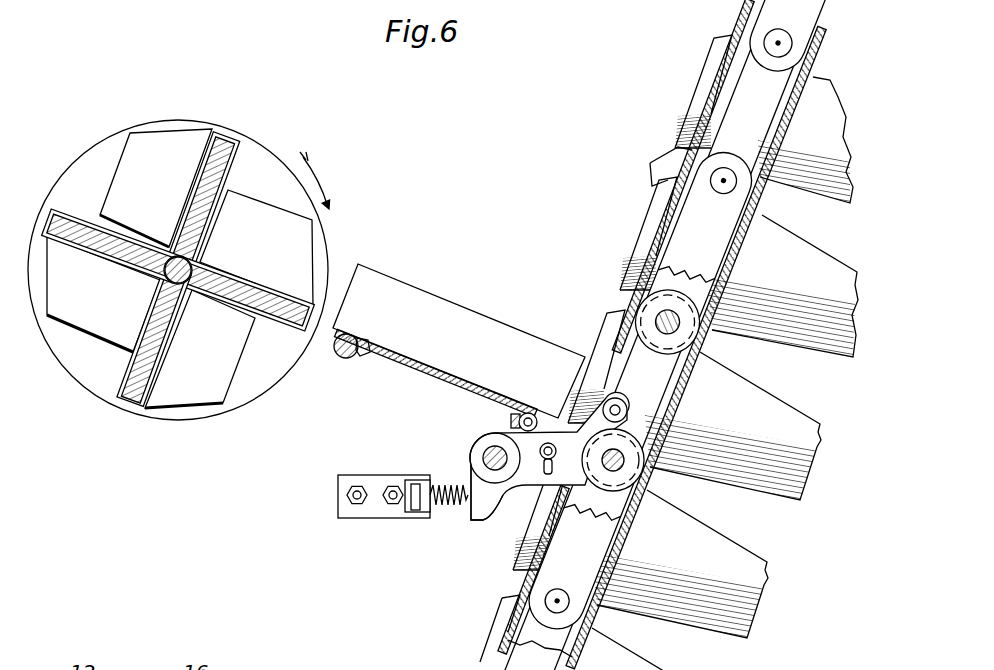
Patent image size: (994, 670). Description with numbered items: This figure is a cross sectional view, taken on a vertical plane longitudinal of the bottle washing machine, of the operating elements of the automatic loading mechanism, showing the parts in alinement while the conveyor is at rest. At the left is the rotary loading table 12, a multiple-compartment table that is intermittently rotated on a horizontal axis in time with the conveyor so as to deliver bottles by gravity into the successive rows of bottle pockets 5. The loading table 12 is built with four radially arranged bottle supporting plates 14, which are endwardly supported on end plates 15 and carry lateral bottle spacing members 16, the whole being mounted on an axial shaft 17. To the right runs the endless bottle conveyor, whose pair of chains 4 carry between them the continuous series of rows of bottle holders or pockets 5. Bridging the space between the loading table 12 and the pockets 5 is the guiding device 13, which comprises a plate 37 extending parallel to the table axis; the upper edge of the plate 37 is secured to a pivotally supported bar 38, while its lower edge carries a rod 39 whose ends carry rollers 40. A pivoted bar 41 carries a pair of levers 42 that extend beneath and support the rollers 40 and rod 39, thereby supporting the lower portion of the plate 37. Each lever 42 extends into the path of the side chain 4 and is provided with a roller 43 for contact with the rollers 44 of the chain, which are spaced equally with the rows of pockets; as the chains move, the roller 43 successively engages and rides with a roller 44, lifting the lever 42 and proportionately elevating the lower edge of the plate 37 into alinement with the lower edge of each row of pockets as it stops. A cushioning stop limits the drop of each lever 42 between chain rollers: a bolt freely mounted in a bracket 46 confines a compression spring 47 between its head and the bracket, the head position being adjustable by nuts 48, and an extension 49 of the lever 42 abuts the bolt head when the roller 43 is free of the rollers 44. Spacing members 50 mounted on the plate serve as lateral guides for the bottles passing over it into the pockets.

The chains 4 is at (669, 335).
The bottle holders or pockets 5 is at (652, 165).
The loading table 12 is at (184, 280).
The guiding device 13 is at (451, 338).
The bottle supporting plates 14 is at (228, 143).
The end plates 15 is at (76, 357).
The bottle spacing members 16 is at (305, 250).
The axial shaft 17 is at (172, 255).
The plate 37 is at (420, 367).
The supporting bar 38 is at (340, 358).
The rod 39 is at (538, 412).
The rollers 40 is at (511, 420).
The pivoted bar 41 is at (485, 452).
The levers 42 is at (551, 459).
The rollers 43 is at (624, 397).
The rollers of the chains 44 is at (623, 473).
The bracket 46 is at (418, 520).
The compression spring 47 is at (440, 484).
The nuts 48 is at (415, 490).
The extension 49 is at (478, 513).
The spacing members 50 is at (398, 295).